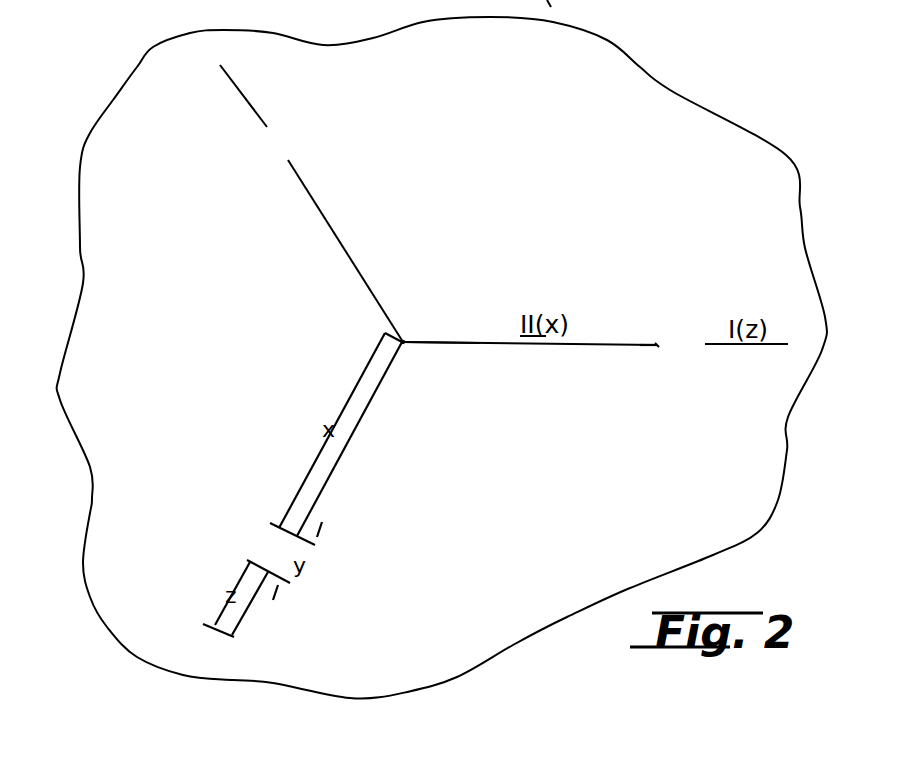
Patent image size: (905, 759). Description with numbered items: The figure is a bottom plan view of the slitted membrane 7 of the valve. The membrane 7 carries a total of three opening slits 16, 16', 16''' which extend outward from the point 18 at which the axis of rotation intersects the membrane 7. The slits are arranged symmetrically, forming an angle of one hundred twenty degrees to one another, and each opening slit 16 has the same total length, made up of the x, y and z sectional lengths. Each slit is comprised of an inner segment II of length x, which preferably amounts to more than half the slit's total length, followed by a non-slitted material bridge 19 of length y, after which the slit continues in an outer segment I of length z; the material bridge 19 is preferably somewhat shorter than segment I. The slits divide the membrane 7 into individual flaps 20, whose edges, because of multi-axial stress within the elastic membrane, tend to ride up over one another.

The membrane 7 is at (590, 123).
The opening slit 16 is at (530, 384).
The opening slit 16' is at (462, 349).
The opening slit 16''' is at (671, 314).
The intersection point of axis of rotation with membrane 18 is at (403, 335).
The material bridge 19 is at (685, 345).
The flap 20 is at (338, 353).